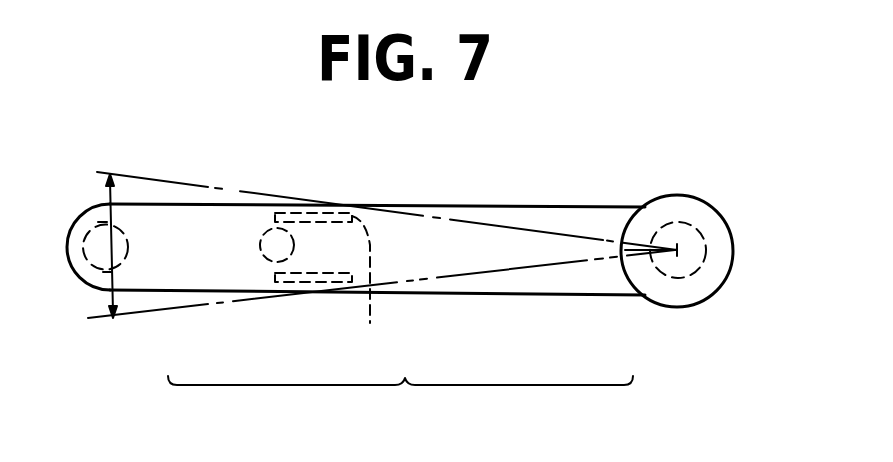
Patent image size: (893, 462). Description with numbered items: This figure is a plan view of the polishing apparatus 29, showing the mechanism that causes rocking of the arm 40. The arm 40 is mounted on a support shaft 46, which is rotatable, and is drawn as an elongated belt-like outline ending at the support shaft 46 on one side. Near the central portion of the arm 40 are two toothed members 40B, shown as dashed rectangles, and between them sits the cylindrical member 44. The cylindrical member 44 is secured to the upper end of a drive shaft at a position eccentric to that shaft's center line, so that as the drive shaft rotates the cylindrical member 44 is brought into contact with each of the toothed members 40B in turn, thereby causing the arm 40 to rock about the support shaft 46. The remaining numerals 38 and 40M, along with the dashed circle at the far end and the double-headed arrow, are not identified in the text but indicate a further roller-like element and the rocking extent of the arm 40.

The polishing apparatus 29 is at (400, 405).
The drive roller 38 is at (130, 244).
The arm 40 is at (507, 277).
The belt meandering width indication 40M is at (98, 288).
The toothed members 40B is at (330, 283).
The cylindrical member 44 is at (263, 256).
The support shaft 46 is at (670, 278).